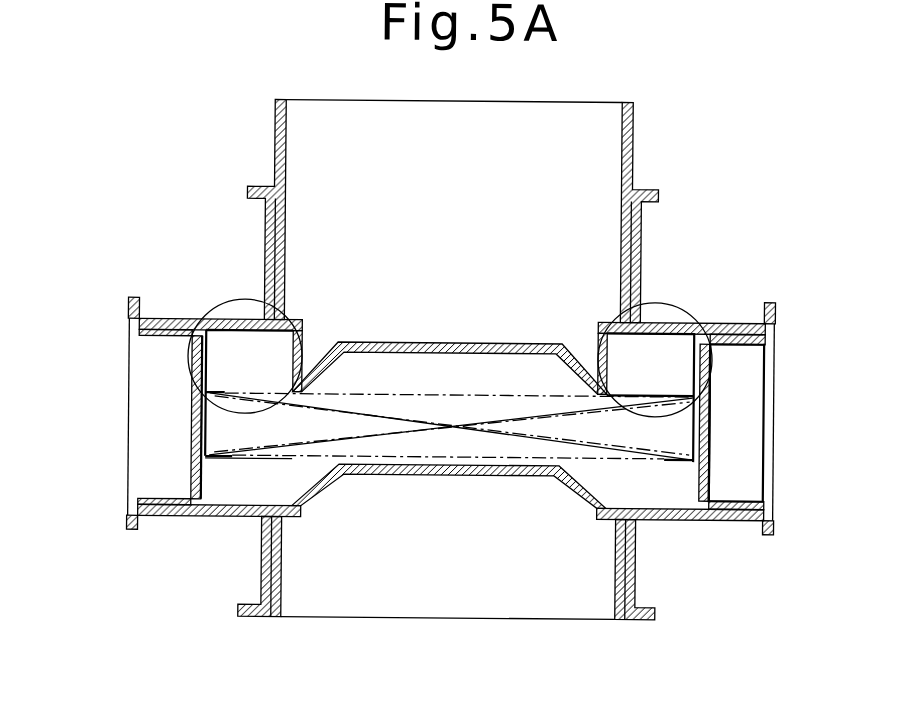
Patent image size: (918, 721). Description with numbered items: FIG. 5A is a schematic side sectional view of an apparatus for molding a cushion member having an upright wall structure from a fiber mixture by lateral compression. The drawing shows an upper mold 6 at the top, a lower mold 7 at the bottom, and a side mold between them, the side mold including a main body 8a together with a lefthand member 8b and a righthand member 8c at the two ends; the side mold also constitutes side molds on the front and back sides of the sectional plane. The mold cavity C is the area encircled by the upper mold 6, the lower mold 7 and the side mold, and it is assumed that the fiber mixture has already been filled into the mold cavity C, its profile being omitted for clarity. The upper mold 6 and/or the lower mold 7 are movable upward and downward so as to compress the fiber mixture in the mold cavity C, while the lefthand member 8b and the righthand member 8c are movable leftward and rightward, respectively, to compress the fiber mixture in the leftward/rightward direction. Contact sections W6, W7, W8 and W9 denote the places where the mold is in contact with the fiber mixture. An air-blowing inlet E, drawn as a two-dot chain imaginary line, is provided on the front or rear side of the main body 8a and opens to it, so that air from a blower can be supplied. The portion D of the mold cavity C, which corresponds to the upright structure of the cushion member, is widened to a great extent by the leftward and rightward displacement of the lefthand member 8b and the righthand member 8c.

The upper mold 6 is at (333, 222).
The lower mold 7 is at (332, 549).
The main body 8a is at (217, 356).
The lefthand member 8b is at (145, 421).
The righthand member 8c is at (728, 430).
The contact section W6 is at (518, 340).
The contact section W7 is at (405, 485).
The contact section W8 is at (187, 457).
The contact section W9 is at (713, 470).
The portion of the mold cavity corresponding to the upright structure D is at (224, 303).
The air-blowing inlet E is at (460, 427).
The mold cavity C is at (247, 480).